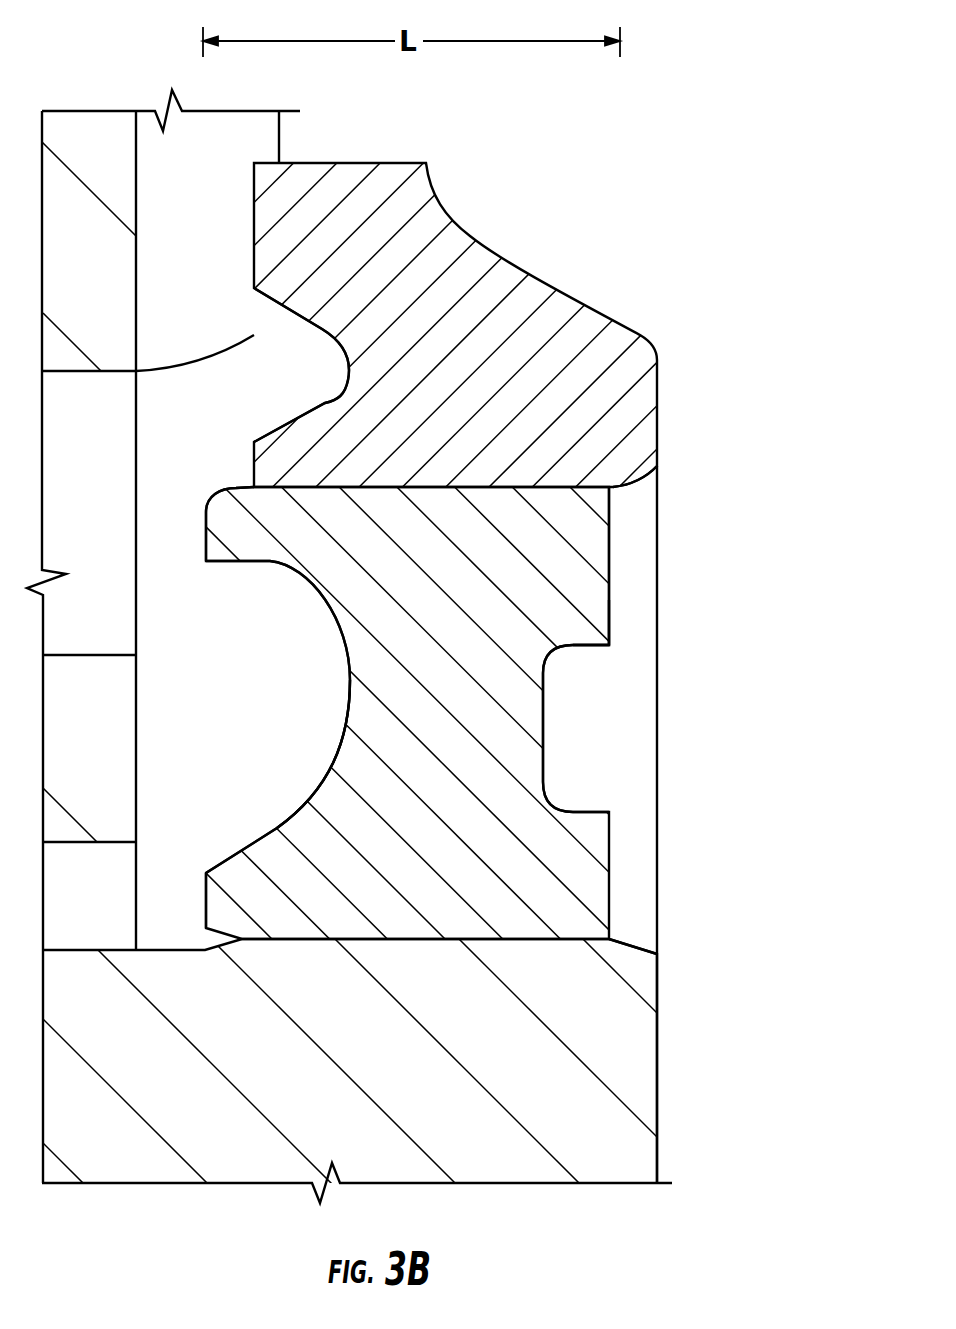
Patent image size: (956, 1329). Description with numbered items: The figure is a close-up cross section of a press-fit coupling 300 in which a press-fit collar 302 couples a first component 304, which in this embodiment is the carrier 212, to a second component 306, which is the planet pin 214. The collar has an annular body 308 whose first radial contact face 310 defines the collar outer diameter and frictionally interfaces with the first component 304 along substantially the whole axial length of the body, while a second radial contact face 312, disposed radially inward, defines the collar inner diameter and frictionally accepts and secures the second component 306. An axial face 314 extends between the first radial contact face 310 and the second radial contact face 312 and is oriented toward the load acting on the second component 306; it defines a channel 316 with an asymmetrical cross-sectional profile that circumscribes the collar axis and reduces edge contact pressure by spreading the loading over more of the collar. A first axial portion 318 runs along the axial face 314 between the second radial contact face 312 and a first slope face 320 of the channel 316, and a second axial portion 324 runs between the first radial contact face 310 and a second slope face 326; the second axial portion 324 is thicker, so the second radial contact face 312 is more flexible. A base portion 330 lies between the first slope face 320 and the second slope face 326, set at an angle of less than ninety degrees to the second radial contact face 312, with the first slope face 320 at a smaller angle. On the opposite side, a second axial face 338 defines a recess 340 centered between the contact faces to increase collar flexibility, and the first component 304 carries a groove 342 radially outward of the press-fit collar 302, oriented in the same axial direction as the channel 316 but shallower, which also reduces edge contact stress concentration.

The press-fit coupling 300 is at (757, 98).
The carrier 212 is at (478, 350).
The first component 304 is at (637, 360).
The groove 342 is at (282, 326).
The first radial contact face 310 is at (598, 482).
The press-fit collar 302 is at (573, 883).
The axial face 314 is at (192, 543).
The second axial portion 324 is at (202, 508).
The second slope face 326 is at (227, 565).
The channel 316 is at (270, 688).
The base portion 330 is at (350, 705).
The first slope face 320 is at (234, 858).
The first axial portion 318 is at (205, 905).
The annular body 308 is at (593, 552).
The second axial face 338 is at (609, 613).
The recess 340 is at (579, 733).
The second radial contact face 312 is at (573, 939).
The planet pin 214 is at (472, 1100).
The second component 306 is at (597, 1117).